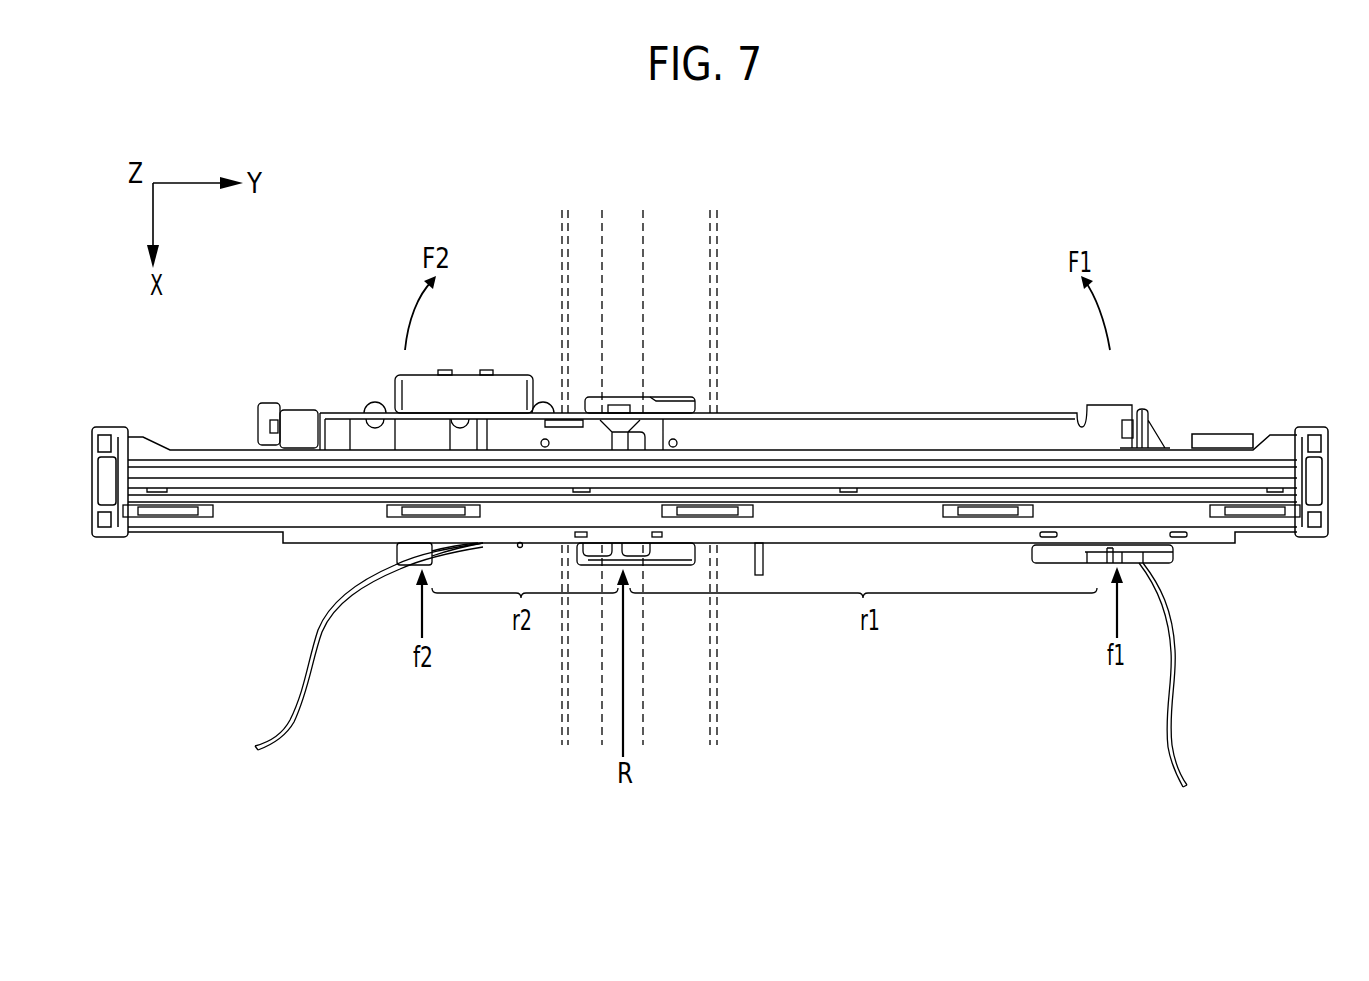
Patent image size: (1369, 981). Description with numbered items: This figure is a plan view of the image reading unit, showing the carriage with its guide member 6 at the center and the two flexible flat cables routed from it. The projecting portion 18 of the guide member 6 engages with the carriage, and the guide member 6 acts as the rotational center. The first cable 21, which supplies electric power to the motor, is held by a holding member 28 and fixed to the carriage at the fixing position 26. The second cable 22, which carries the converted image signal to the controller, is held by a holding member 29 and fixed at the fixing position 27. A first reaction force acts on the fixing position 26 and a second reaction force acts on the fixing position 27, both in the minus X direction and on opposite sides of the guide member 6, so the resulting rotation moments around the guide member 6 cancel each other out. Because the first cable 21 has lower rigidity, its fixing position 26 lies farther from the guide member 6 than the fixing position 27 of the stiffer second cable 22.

The projecting portion 18 is at (623, 257).
The guide member 6 is at (717, 270).
The second cable 22 is at (303, 672).
The first cable 21 is at (1175, 672).
The fixing position 27 is at (417, 629).
The holding member 29 is at (412, 565).
The fixing position 26 is at (1102, 630).
The holding member 28 is at (1107, 565).